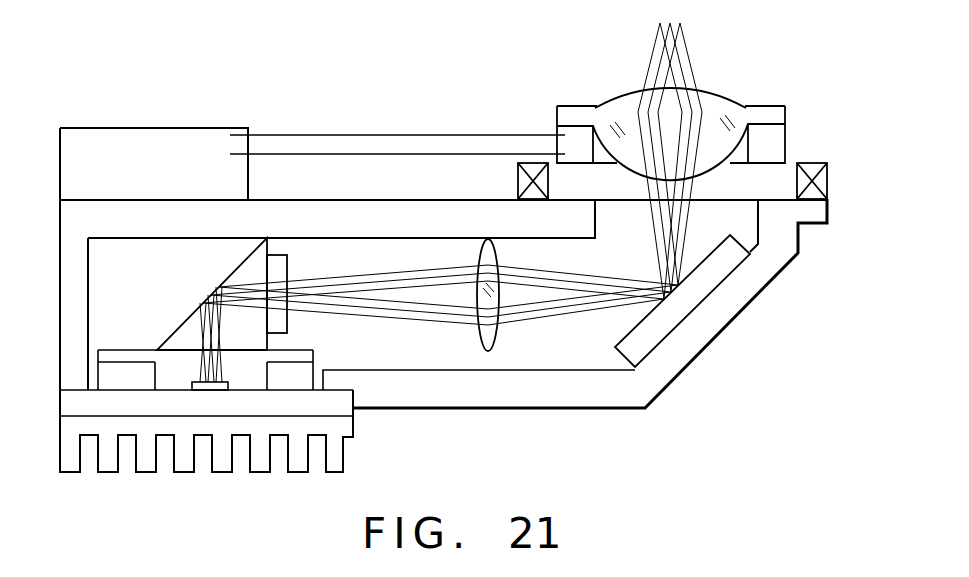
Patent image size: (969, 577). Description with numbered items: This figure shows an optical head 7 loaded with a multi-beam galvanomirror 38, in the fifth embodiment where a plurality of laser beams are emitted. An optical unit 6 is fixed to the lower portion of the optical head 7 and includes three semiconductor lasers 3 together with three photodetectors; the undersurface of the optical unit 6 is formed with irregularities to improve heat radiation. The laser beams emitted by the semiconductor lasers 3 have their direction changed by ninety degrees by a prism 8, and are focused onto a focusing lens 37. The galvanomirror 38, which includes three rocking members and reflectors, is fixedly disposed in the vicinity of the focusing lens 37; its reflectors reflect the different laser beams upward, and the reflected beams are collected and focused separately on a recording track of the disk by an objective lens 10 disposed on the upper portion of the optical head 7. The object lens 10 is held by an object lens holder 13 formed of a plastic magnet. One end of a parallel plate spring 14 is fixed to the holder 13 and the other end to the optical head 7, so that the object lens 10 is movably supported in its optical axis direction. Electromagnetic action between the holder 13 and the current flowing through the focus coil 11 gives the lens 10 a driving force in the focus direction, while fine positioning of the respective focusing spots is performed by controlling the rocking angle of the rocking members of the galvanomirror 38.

The semiconductor laser 3 is at (205, 393).
The optical unit 6 is at (245, 476).
The optical head 7 is at (643, 427).
The prism 8 is at (182, 342).
The object lens 10 is at (612, 108).
The focus coil 11 is at (828, 182).
The object lens holder 13 is at (778, 143).
The parallel plate spring 14 is at (337, 135).
The focusing lens 37 is at (495, 339).
The galvanomirror 38 is at (695, 293).